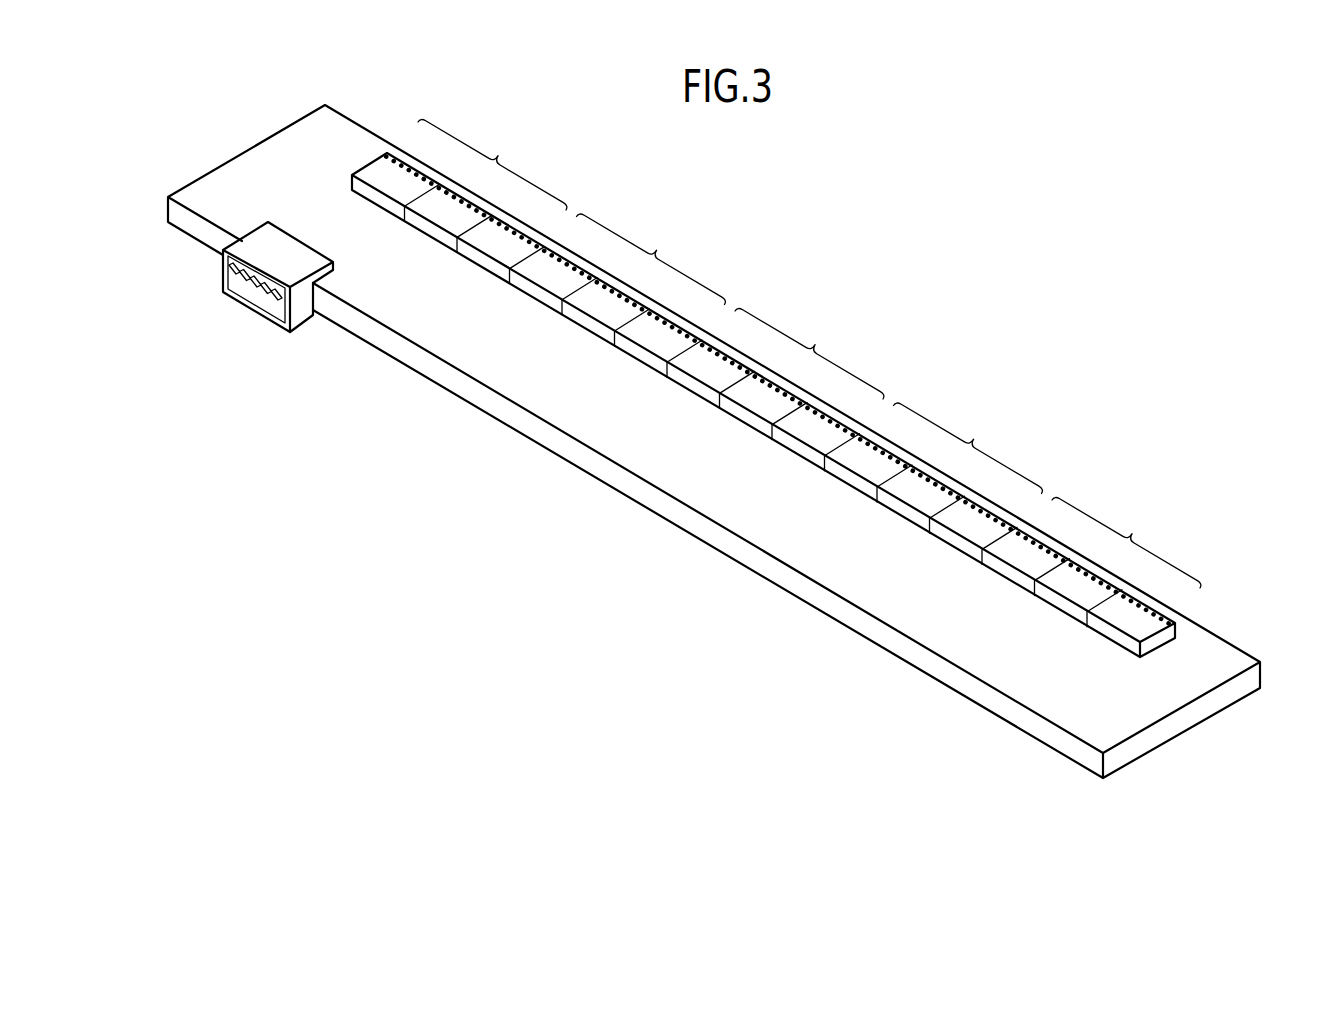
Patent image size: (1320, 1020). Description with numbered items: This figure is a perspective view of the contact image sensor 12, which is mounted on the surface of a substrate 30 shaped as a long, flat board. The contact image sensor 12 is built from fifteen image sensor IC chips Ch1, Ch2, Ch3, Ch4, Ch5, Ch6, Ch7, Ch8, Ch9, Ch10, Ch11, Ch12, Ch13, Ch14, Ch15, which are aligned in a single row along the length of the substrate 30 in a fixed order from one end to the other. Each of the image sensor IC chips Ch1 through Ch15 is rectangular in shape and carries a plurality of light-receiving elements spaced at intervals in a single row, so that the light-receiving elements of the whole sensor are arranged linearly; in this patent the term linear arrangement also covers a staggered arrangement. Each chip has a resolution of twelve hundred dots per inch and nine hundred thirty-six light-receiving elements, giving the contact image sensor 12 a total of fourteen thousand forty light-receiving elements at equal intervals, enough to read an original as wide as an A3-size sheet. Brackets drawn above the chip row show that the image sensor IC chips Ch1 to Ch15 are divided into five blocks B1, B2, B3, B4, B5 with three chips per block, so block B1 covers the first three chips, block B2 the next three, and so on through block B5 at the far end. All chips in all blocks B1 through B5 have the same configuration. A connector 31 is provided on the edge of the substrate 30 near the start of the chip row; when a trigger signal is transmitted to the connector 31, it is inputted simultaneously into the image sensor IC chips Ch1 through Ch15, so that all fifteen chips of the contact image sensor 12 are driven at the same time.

The contact image sensor 12 is at (807, 435).
The substrate 30 is at (1103, 718).
The connector 31 is at (250, 247).
The block B1 is at (457, 214).
The block B2 is at (615, 307).
The block B3 is at (772, 402).
The block B4 is at (929, 495).
The block B5 is at (1087, 590).
The image sensor IC chip Ch1 is at (385, 185).
The image sensor IC chip Ch2 is at (438, 216).
The image sensor IC chip Ch3 is at (490, 247).
The image sensor IC chip Ch4 is at (542, 279).
The image sensor IC chip Ch5 is at (595, 310).
The image sensor IC chip Ch6 is at (648, 341).
The image sensor IC chip Ch7 is at (700, 372).
The image sensor IC chip Ch8 is at (752, 403).
The image sensor IC chip Ch9 is at (805, 435).
The image sensor IC chip Ch10 is at (858, 466).
The image sensor IC chip Ch11 is at (910, 497).
The image sensor IC chip Ch12 is at (962, 528).
The image sensor IC chip Ch13 is at (1015, 559).
The image sensor IC chip Ch14 is at (1068, 591).
The image sensor IC chip Ch15 is at (1102, 636).